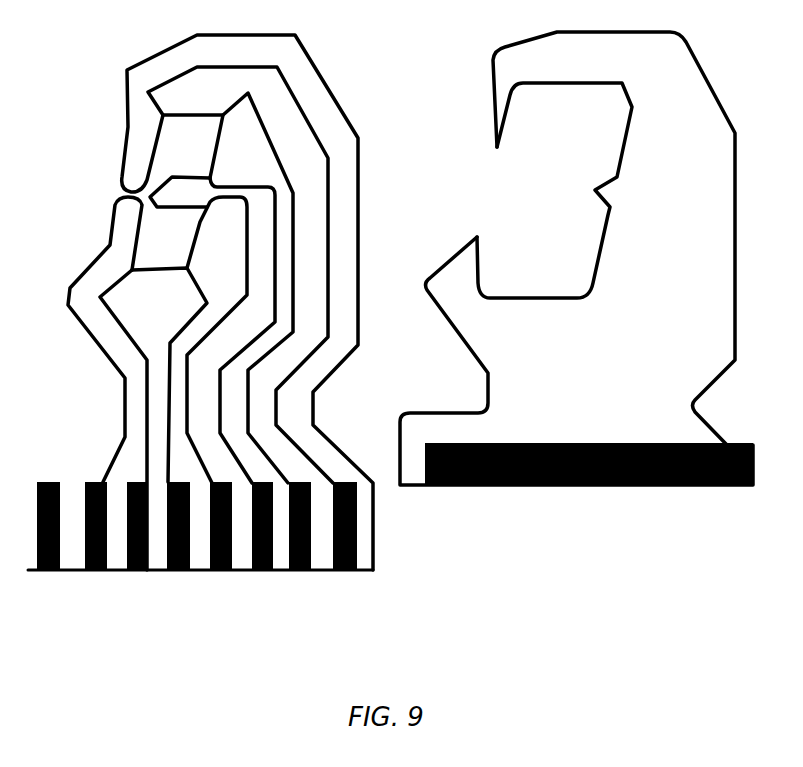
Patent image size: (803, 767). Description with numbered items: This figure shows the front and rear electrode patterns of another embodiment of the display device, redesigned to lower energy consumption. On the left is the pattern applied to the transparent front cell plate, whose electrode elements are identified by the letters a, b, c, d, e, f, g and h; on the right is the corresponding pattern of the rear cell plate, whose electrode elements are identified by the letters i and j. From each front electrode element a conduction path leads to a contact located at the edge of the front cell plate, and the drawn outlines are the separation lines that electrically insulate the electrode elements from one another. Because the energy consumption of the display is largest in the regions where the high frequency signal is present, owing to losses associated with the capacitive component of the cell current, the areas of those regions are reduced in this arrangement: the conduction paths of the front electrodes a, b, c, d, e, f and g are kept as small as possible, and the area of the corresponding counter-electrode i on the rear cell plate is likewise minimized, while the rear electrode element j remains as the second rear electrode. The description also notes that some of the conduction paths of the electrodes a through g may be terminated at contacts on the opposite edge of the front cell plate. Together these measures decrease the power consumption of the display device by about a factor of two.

The electrode element a is at (320, 562).
The electrode element b is at (280, 562).
The electrode element c is at (197, 560).
The electrode element d is at (155, 558).
The electrode element e is at (115, 560).
The electrode element f is at (362, 562).
The electrode element g is at (240, 562).
The electrode element h is at (68, 563).
The counter-electrode i is at (592, 403).
The electrode element j is at (547, 213).